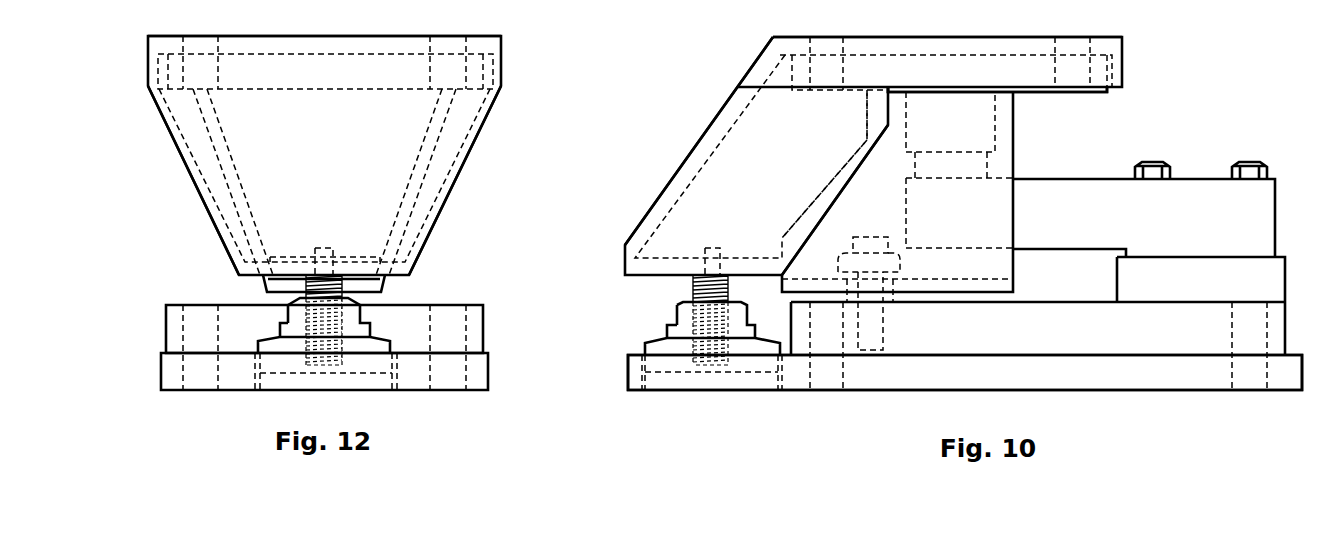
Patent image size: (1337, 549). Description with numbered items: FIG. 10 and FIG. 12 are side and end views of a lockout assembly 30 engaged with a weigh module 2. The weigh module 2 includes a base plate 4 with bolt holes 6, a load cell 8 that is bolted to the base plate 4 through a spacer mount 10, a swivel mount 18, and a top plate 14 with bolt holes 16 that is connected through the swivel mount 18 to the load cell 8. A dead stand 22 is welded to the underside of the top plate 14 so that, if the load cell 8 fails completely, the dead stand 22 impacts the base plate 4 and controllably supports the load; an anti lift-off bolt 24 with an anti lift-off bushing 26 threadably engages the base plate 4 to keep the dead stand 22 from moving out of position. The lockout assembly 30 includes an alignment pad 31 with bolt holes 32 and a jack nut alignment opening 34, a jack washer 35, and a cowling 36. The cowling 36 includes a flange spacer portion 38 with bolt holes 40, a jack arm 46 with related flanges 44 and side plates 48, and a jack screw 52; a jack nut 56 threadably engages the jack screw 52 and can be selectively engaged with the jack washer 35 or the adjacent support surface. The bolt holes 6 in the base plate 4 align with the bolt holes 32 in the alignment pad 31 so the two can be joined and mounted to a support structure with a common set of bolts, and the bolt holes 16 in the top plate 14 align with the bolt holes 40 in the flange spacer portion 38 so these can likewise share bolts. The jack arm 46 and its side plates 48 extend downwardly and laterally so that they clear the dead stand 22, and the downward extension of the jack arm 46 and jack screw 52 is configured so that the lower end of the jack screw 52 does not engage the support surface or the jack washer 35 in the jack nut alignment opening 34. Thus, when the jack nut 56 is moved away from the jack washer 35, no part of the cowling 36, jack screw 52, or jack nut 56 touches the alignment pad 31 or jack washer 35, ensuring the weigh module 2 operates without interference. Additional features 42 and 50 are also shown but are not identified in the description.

In FIG. 10, the weigh module 2 is at (1236, 118).
In FIG. 12, the base plate 4 is at (166, 333).
In FIG. 10, the base plate 4 is at (1072, 302).
In FIG. 12, the bolt holes 6 is at (218, 318).
In FIG. 10, the bolt holes 6 is at (810, 330).
In FIG. 10, the load cell 8 is at (1275, 213).
In FIG. 10, the spacer mount 10 is at (1285, 280).
In FIG. 12, the top plate 14 is at (330, 90).
In FIG. 10, the top plate 14 is at (790, 72).
In FIG. 12, the bolt holes 16 is at (218, 76).
In FIG. 10, the bolt holes 16 is at (843, 72).
In FIG. 10, the swivel mount 18 is at (917, 150).
In FIG. 12, the dead stand 22 is at (247, 194).
In FIG. 10, the dead stand 22 is at (867, 115).
In FIG. 10, the anti lift-off bolt 24 is at (872, 237).
In FIG. 10, the anti lift-off bushing 26 is at (893, 260).
In FIG. 10, the lockout assembly 30 is at (643, 422).
In FIG. 12, the alignment pad 31 is at (161, 372).
In FIG. 10, the alignment pad 31 is at (1043, 390).
In FIG. 12, the bolt holes 32 is at (183, 378).
In FIG. 10, the bolt holes 32 is at (843, 380).
In FIG. 12, the jack nut alignment opening 34 is at (393, 365).
In FIG. 10, the jack nut alignment opening 34 is at (628, 365).
In FIG. 12, the jack washer 35 is at (260, 380).
In FIG. 10, the jack washer 35 is at (645, 380).
In FIG. 10, the cowling 36 is at (698, 100).
In FIG. 12, the flange spacer portion 38 is at (322, 36).
In FIG. 10, the flange spacer portion 38 is at (965, 37).
In FIG. 12, the bolt holes 40 is at (184, 47).
In FIG. 10, the bolt holes 40 is at (843, 47).
In FIG. 10, the edge recess 42 is at (1112, 72).
In FIG. 12, the flanges 44 is at (158, 73).
In FIG. 10, the flanges 44 is at (978, 87).
In FIG. 10, the jack arm 46 is at (695, 148).
In FIG. 12, the side plates 48 is at (200, 193).
In FIG. 10, the side plates 48 is at (816, 218).
In FIG. 10, the stud recess 50 is at (662, 258).
In FIG. 12, the jack screw 52 is at (333, 278).
In FIG. 10, the jack screw 52 is at (693, 285).
In FIG. 12, the jack nut 56 is at (287, 323).
In FIG. 10, the jack nut 56 is at (677, 320).